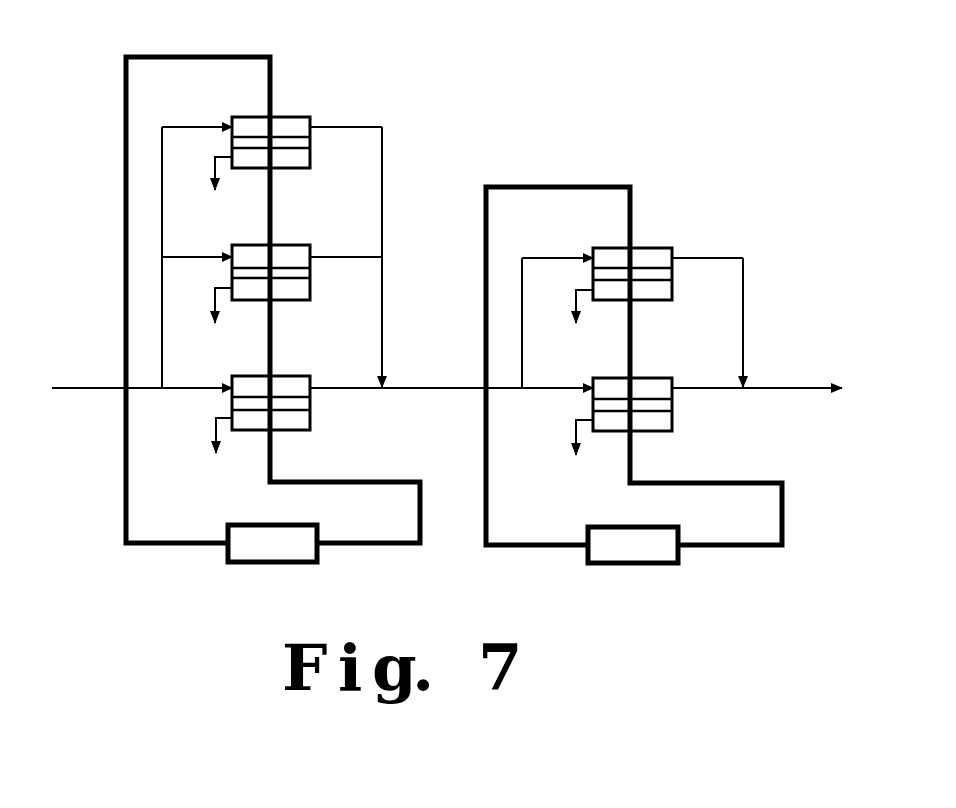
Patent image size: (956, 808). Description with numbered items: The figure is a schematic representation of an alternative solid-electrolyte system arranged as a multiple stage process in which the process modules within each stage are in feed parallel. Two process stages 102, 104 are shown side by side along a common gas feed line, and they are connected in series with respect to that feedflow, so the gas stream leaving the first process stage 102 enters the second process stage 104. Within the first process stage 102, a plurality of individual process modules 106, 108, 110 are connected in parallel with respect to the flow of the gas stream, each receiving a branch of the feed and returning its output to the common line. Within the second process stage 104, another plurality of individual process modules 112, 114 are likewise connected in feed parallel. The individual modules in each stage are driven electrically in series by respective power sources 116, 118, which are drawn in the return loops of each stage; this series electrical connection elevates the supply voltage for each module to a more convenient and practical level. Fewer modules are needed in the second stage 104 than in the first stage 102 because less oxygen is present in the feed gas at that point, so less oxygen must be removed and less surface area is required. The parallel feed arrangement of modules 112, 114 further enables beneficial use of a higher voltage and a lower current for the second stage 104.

The process stage 102 is at (112, 478).
The process stage 104 is at (759, 298).
The process module 106 is at (316, 104).
The process module 108 is at (330, 240).
The process module 110 is at (330, 375).
The process module 112 is at (662, 231).
The process module 114 is at (675, 437).
The power source 116 is at (273, 550).
The power source 118 is at (623, 555).